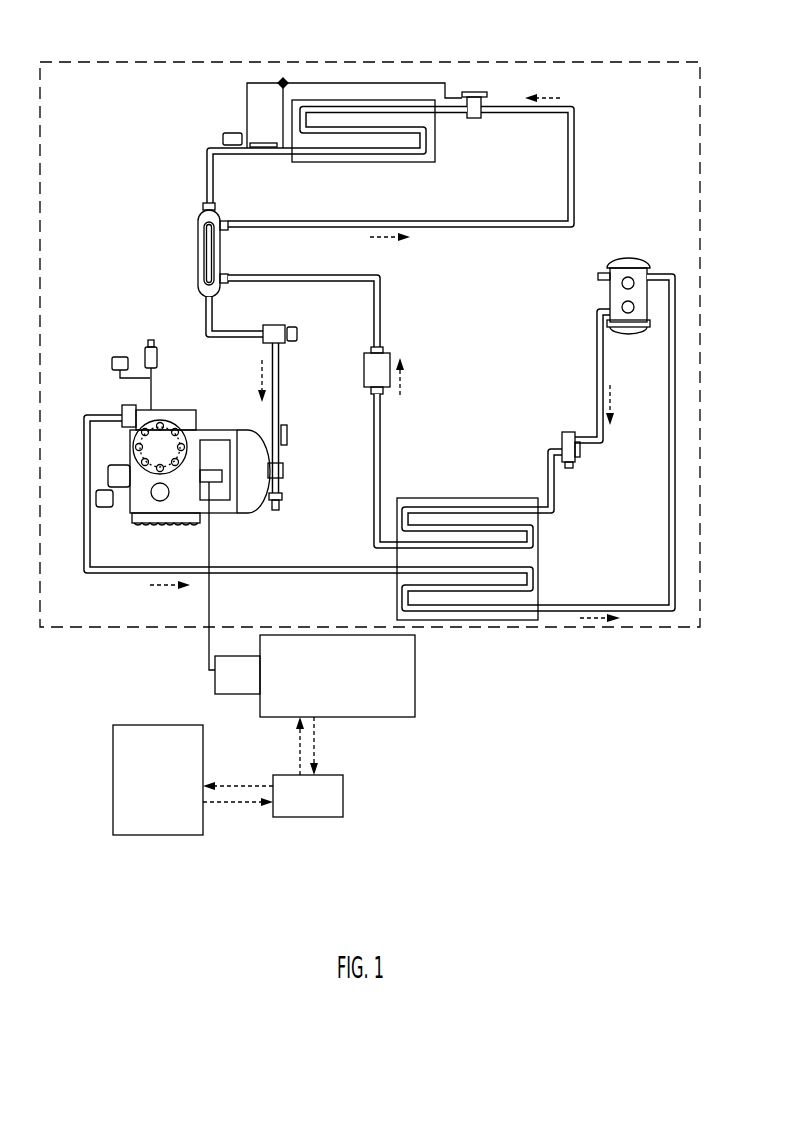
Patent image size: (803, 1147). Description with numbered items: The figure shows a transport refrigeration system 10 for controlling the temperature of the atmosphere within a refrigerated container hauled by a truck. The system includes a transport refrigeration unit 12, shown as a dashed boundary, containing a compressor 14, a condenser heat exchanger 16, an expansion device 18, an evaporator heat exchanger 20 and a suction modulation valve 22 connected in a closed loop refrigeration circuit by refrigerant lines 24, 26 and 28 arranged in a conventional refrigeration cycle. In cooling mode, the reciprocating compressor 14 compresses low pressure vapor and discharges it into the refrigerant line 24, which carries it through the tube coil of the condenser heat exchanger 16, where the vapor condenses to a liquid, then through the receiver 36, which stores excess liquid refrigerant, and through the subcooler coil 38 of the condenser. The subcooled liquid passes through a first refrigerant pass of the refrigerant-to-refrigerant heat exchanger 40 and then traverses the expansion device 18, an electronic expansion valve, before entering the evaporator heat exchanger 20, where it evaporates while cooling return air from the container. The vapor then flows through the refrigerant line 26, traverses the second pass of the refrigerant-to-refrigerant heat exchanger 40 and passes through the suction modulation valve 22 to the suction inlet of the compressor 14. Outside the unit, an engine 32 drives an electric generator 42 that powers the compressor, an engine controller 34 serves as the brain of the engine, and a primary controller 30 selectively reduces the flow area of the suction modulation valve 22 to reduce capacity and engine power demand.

The transport refrigeration system 10 is at (370, 444).
The transport refrigeration unit 12 is at (160, 62).
The compressor 14 is at (235, 513).
The condenser heat exchanger 16 is at (379, 448).
The expansion device 18 is at (484, 100).
The evaporator heat exchanger 20 is at (435, 142).
The suction modulation valve 22 is at (278, 325).
The refrigerant line 24 is at (330, 565).
The refrigerant line 26 is at (383, 323).
The refrigerant line 28 is at (221, 218).
The primary controller 30 is at (172, 835).
The engine 32 is at (350, 717).
The engine controller 34 is at (343, 798).
The receiver 36 is at (622, 333).
The subcooler coil 38 is at (455, 505).
The refrigerant-to-refrigerant heat exchanger 40 is at (222, 248).
The electric generator 42 is at (222, 694).